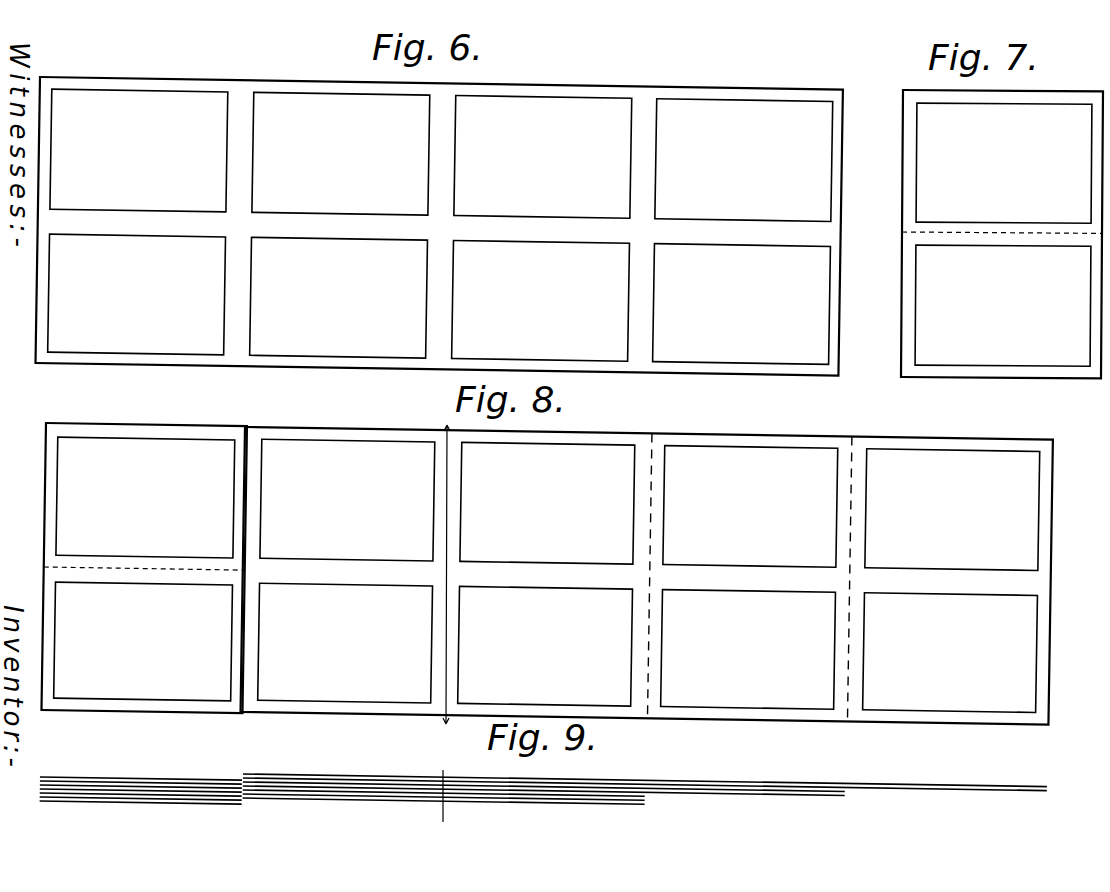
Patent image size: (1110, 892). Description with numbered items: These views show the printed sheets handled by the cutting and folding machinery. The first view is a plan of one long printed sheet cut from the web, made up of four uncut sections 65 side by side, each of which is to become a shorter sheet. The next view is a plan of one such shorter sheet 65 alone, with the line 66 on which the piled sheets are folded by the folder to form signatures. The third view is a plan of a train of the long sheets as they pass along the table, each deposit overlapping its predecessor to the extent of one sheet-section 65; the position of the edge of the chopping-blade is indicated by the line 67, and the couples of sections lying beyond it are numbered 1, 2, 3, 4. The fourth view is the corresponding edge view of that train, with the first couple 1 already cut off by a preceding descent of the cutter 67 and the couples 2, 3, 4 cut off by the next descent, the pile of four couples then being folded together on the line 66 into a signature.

In FIG. 6, the sheet-section 65 is at (609, 139).
In FIG. 7, the sheet-section 65 is at (1002, 250).
In FIG. 9, the sheet-section 65 is at (543, 781).
In FIG. 7, the folding line 66 is at (1002, 232).
In FIG. 8, the folding line 66 is at (143, 568).
In FIG. 8, the chopping-blade 67 is at (435, 574).
In FIG. 9, the chopping-blade 67 is at (447, 792).
In FIG. 8, the first couple of sheet-sections 1 is at (346, 571).
In FIG. 9, the first couple of sheet-sections 1 is at (341, 812).
In FIG. 8, the second couple of sheet-sections 2 is at (546, 574).
In FIG. 9, the second couple of sheet-sections 2 is at (542, 803).
In FIG. 8, the third couple of sheet-sections 3 is at (749, 578).
In FIG. 9, the third couple of sheet-sections 3 is at (743, 804).
In FIG. 8, the fourth couple of sheet-sections 4 is at (951, 581).
In FIG. 9, the fourth couple of sheet-sections 4 is at (939, 802).